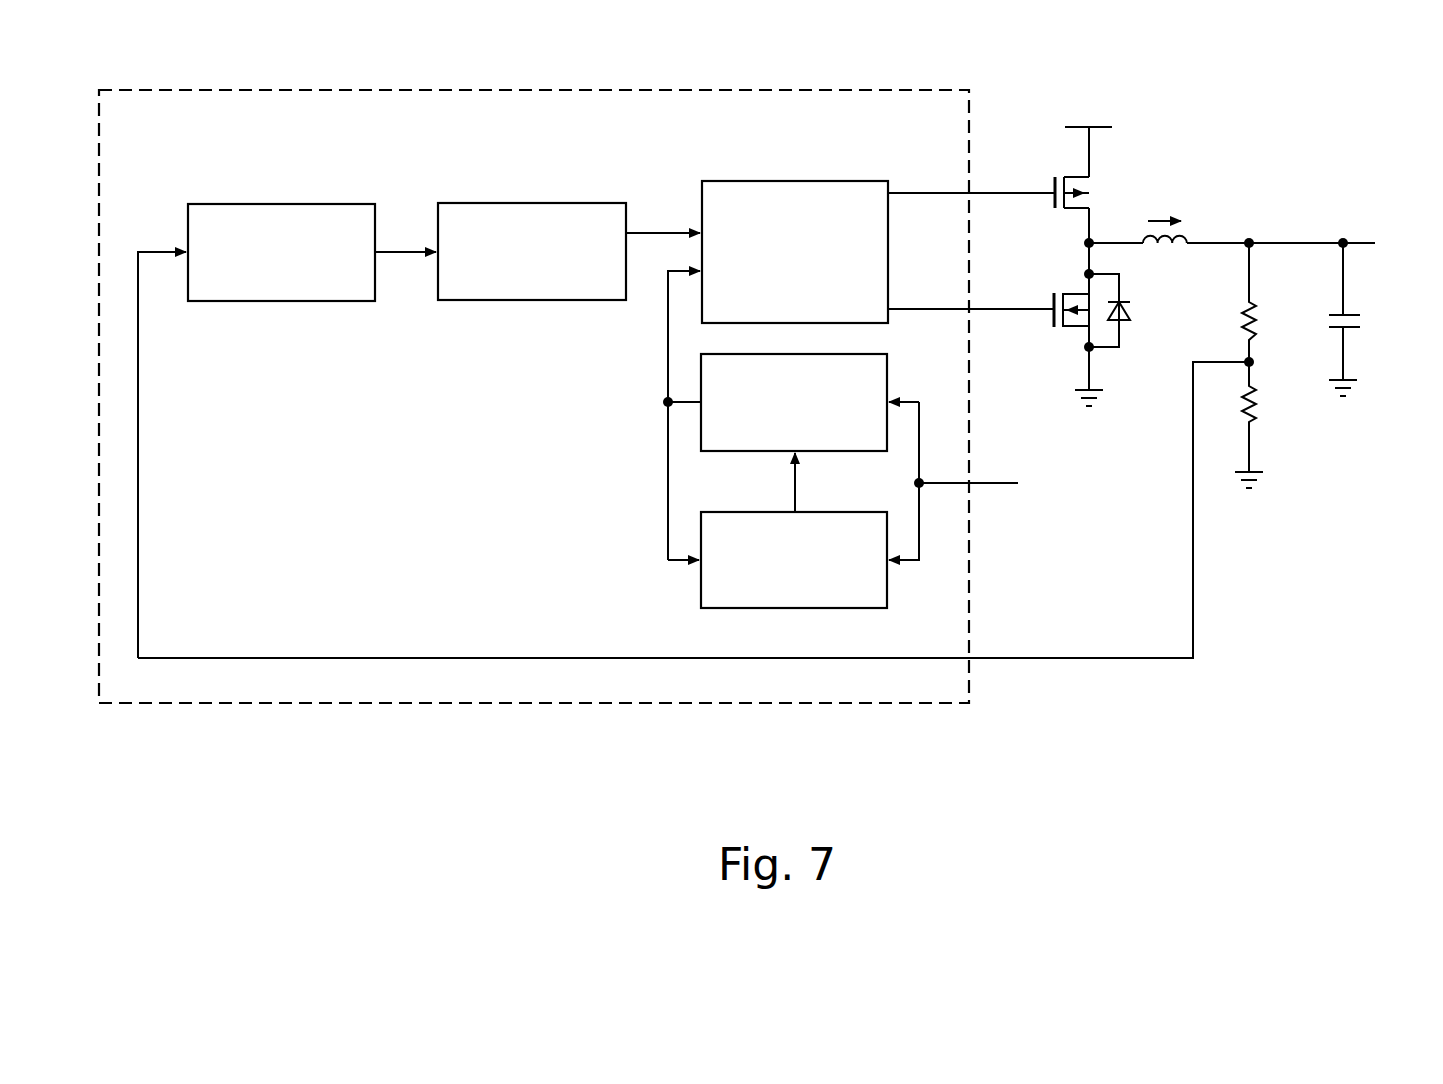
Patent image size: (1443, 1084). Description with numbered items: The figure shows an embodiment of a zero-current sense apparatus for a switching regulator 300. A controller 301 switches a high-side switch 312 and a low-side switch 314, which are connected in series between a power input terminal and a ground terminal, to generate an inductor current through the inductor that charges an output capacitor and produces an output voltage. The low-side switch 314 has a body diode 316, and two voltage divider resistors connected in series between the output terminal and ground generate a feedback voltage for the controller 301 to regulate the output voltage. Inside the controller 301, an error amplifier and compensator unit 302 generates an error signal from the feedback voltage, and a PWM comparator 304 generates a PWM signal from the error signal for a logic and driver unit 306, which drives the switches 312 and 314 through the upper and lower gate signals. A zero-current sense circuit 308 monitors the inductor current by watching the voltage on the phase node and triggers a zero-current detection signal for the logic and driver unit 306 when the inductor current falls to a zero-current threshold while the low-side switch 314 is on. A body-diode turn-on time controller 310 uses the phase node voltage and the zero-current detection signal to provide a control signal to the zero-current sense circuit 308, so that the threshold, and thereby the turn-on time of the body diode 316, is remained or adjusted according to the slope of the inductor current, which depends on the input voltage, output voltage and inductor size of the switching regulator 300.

The switching regulator 300 is at (1379, 125).
The controller 301 is at (502, 88).
The error amplifier and compensator unit 302 is at (273, 204).
The PWM comparator 304 is at (530, 203).
The logic and driver unit 306 is at (792, 181).
The zero-current sense circuit 308 is at (888, 378).
The body-diode turn-on time controller 310 is at (701, 585).
The high-side switch 312 is at (1068, 170).
The low-side switch 314 is at (1068, 337).
The body diode 316 is at (1130, 312).